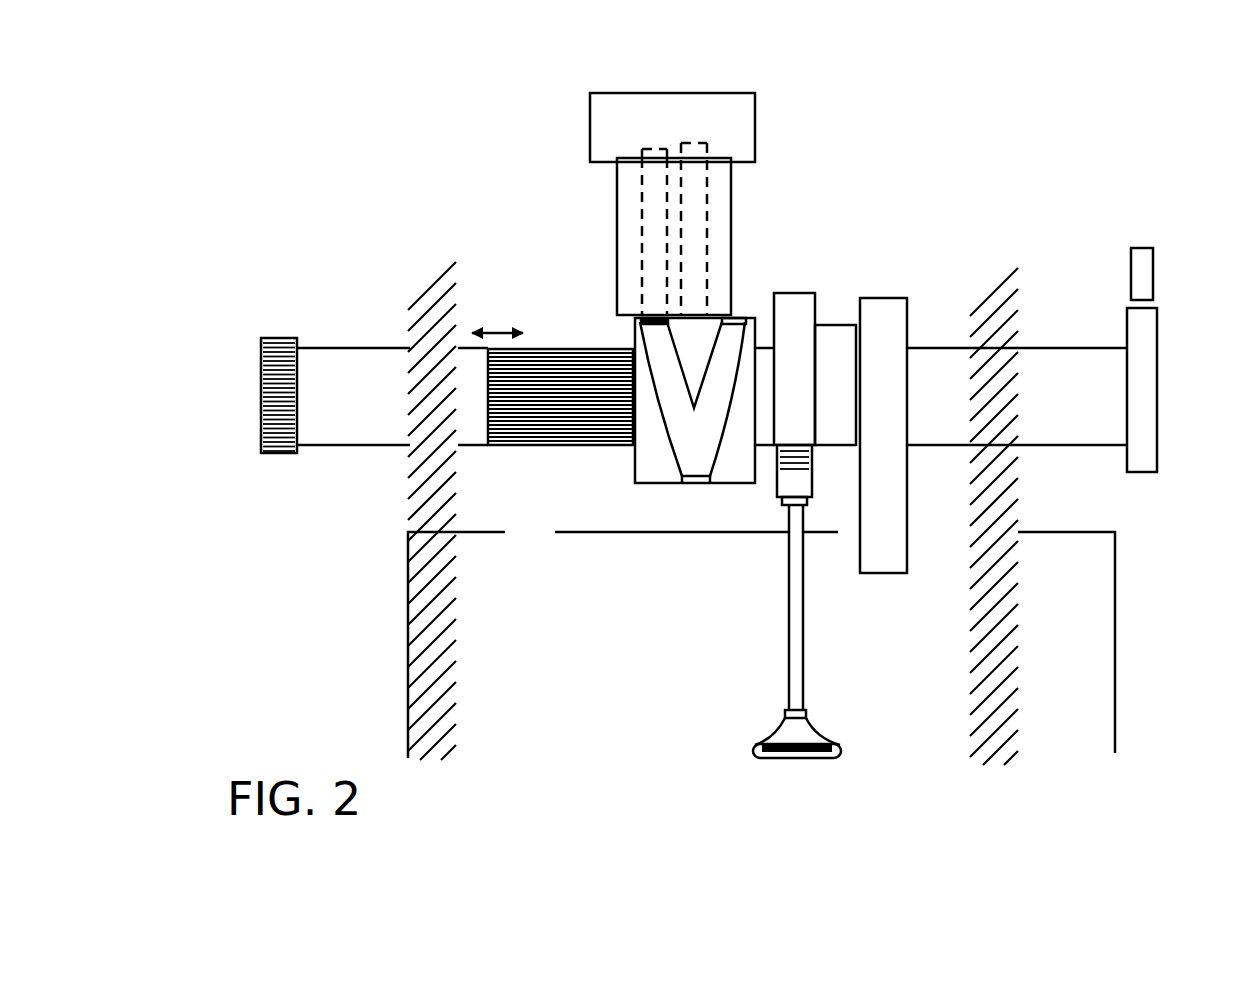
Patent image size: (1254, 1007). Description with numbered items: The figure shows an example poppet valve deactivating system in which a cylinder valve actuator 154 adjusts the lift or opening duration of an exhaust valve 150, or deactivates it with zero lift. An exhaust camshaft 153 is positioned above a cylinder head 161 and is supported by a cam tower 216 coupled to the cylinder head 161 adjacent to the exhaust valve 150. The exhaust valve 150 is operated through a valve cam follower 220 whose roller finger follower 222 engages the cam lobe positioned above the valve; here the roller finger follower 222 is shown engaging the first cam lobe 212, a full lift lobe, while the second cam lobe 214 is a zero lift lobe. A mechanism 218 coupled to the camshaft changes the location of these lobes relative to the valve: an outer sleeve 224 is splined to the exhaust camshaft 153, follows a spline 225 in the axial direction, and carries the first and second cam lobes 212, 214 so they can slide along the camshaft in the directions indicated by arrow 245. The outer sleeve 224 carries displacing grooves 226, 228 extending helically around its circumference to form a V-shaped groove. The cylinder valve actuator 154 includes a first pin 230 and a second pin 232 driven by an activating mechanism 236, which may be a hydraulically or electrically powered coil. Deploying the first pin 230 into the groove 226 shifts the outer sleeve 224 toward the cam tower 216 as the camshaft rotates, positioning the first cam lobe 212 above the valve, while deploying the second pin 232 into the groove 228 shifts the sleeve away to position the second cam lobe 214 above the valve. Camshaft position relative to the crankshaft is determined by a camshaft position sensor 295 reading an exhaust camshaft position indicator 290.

The exhaust valve 150 is at (785, 565).
The exhaust camshaft 153 is at (351, 348).
The cylinder valve actuator 154 is at (630, 172).
The cylinder head 161 is at (1105, 532).
The first cam lobe 212 is at (797, 305).
The second cam lobe 214 is at (822, 330).
The cam tower 216 is at (883, 323).
The mechanism 218 is at (639, 419).
The valve cam follower 220 is at (669, 419).
The roller finger follower 222 is at (797, 472).
The outer sleeve 224 is at (658, 470).
The spline 225 is at (530, 447).
The groove 226 is at (672, 372).
The groove 228 is at (726, 355).
The first pin 230 is at (648, 208).
The second pin 232 is at (691, 197).
The activating mechanism 236 is at (657, 108).
The arrow 245 is at (495, 330).
The exhaust camshaft position indicator 290 is at (1158, 382).
The camshaft position sensor 295 is at (1140, 248).